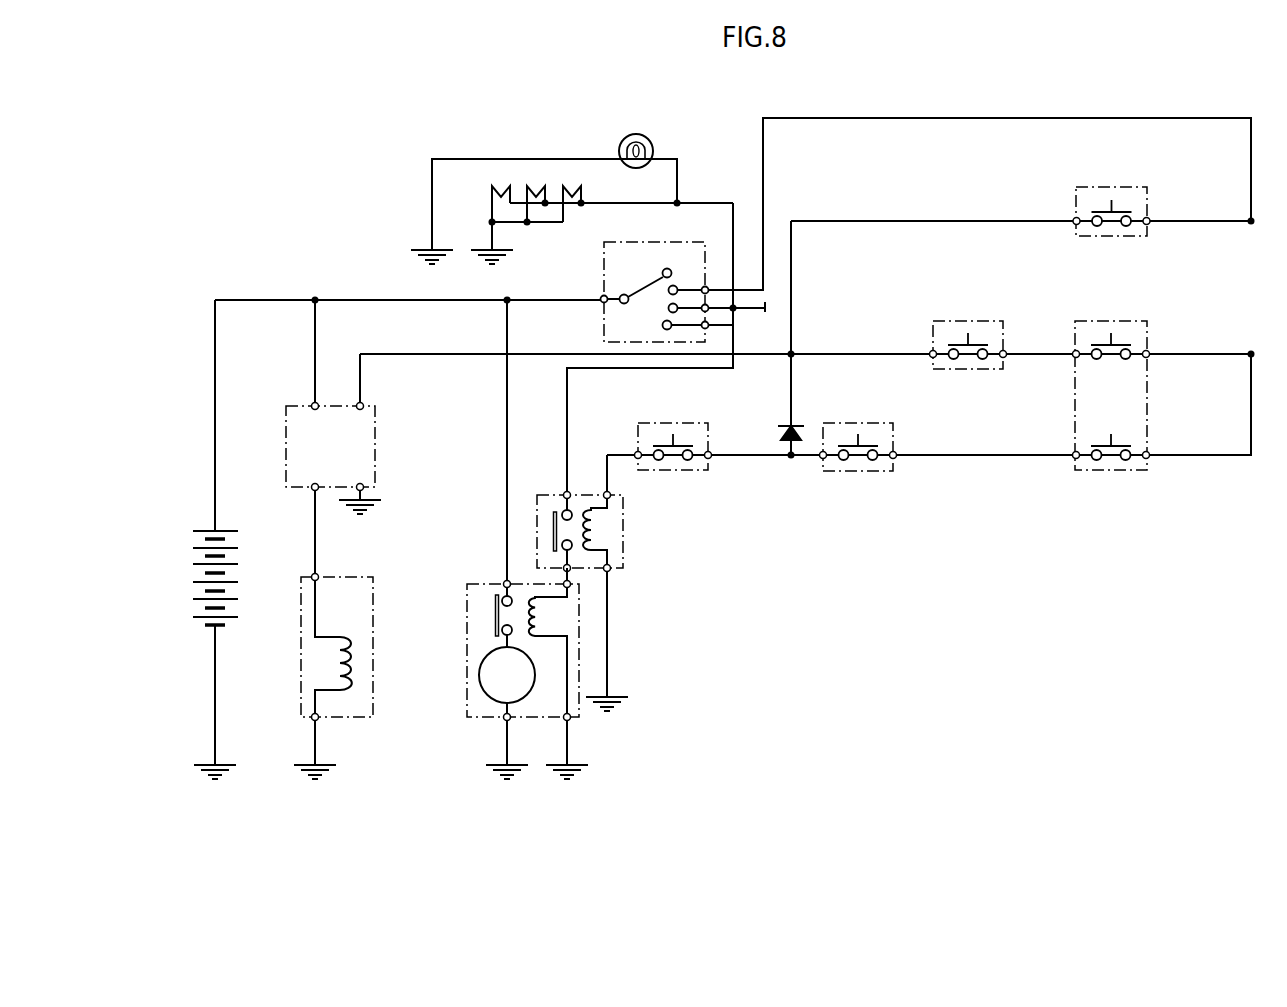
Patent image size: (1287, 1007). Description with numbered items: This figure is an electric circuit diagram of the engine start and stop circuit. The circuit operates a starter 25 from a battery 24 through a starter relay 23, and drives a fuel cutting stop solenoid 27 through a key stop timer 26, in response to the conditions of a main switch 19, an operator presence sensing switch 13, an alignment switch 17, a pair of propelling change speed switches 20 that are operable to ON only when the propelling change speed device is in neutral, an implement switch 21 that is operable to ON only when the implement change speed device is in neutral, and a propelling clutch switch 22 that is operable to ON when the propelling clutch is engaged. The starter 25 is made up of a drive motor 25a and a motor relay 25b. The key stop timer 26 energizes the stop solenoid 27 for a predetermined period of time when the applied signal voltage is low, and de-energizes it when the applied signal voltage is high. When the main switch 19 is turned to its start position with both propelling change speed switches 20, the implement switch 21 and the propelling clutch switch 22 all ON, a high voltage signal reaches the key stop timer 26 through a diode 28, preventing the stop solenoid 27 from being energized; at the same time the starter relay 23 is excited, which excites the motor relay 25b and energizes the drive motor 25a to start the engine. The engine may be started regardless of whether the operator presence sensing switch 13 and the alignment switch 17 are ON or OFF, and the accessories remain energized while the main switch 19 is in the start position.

The operator presence sensing switch 13 is at (1075, 202).
The alignment switch 17 is at (933, 333).
The main switch 19 is at (604, 263).
The propelling change speed switches 20 is at (1147, 335).
The implement switch 21 is at (893, 436).
The propelling clutch switch 22 is at (638, 437).
The starter relay 23 is at (623, 532).
The battery 24 is at (227, 531).
The starter 25 is at (489, 622).
The drive motor 25a is at (479, 677).
The motor relay 25b is at (497, 616).
The key stop timer 26 is at (376, 447).
The fuel cutting stop solenoid 27 is at (373, 637).
The diode 28 is at (782, 432).